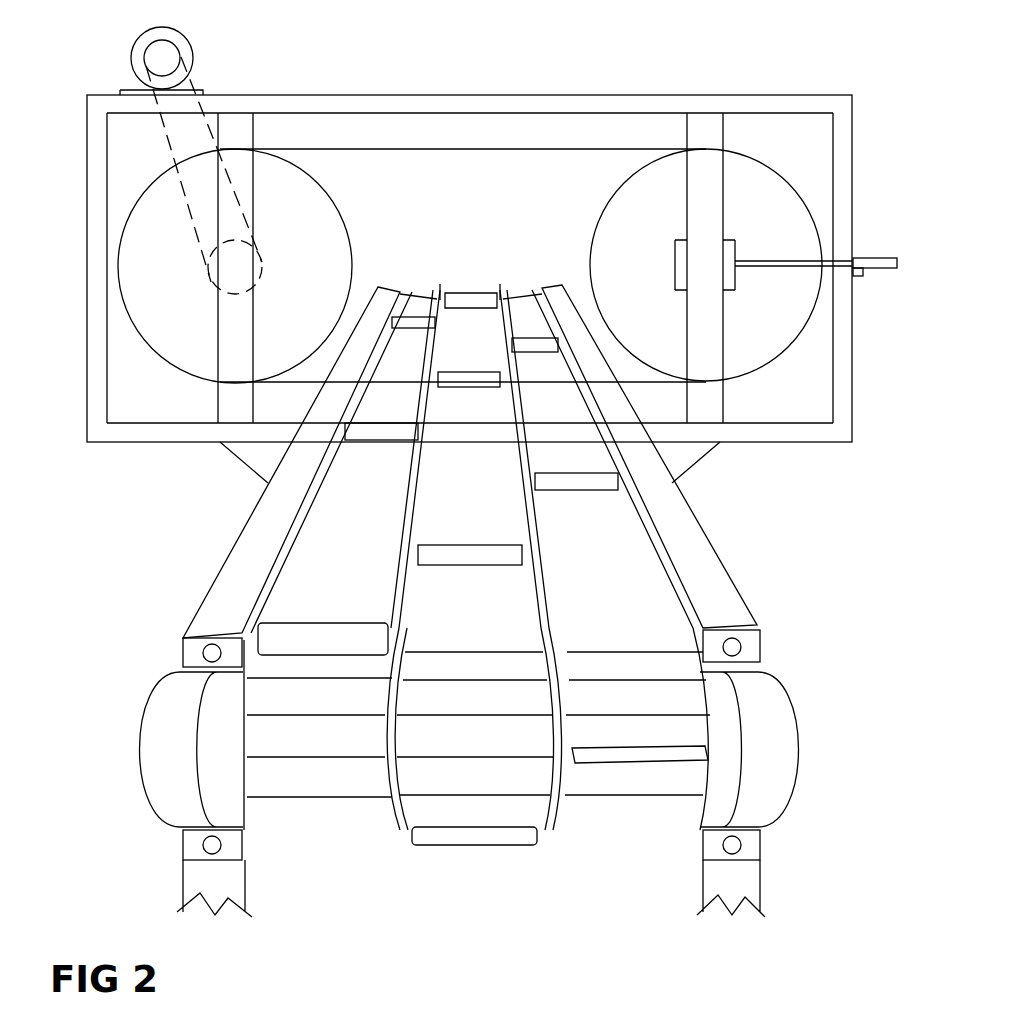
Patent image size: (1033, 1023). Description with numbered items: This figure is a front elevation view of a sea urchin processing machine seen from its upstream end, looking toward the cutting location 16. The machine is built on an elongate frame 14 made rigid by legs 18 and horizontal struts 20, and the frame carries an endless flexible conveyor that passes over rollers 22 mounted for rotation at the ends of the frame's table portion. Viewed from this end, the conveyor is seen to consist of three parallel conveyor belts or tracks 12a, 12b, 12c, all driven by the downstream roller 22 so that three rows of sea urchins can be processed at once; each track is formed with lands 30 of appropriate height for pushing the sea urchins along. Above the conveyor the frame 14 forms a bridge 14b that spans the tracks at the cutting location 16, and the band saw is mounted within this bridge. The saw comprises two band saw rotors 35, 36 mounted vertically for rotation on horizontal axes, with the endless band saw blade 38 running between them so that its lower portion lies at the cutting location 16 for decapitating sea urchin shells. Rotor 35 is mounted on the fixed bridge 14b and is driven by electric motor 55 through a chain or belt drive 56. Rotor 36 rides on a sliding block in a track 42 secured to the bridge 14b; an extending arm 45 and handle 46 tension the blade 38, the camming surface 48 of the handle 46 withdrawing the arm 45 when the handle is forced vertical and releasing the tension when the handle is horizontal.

The elongate frame 14 is at (674, 877).
The bridge 14b is at (508, 94).
The conveyor belt or track 12a is at (318, 674).
The conveyor belt or track 12b is at (474, 560).
The conveyor belt or track 12c is at (637, 690).
The cutting location 16 is at (657, 408).
The legs 18 is at (246, 884).
The horizontal struts 20 is at (225, 562).
The rollers 22 is at (142, 712).
The lands 30 is at (577, 473).
The band saw rotor 35 is at (140, 220).
The band saw rotor 36 is at (772, 174).
The endless band saw blade 38 is at (470, 150).
The track 42 is at (736, 284).
The extending arm 45 is at (795, 260).
The handle 46 is at (884, 251).
The camming surface 48 is at (854, 271).
The electric motor 55 is at (133, 57).
The chain drive or belt drive 56 is at (185, 62).